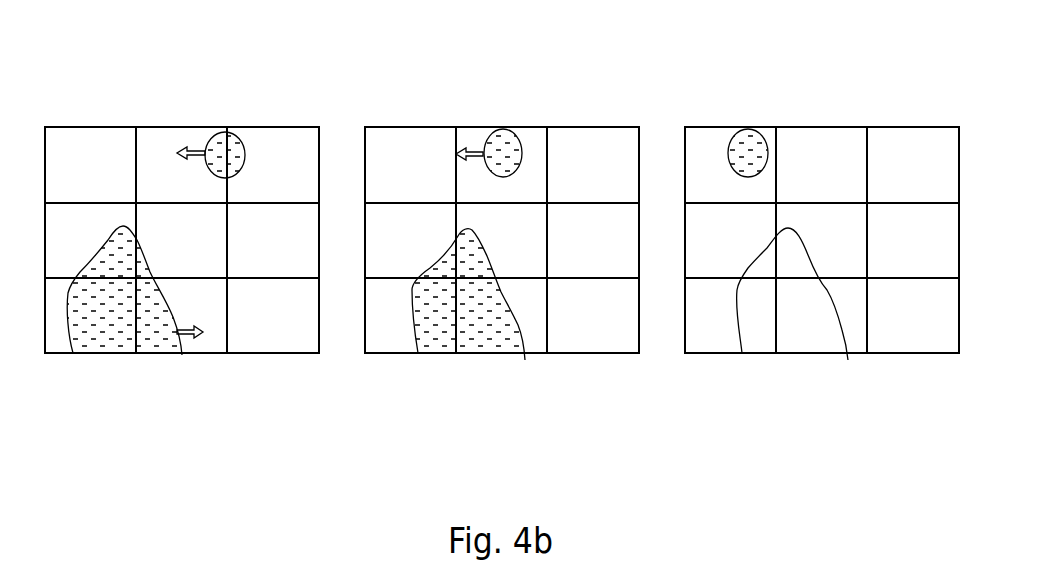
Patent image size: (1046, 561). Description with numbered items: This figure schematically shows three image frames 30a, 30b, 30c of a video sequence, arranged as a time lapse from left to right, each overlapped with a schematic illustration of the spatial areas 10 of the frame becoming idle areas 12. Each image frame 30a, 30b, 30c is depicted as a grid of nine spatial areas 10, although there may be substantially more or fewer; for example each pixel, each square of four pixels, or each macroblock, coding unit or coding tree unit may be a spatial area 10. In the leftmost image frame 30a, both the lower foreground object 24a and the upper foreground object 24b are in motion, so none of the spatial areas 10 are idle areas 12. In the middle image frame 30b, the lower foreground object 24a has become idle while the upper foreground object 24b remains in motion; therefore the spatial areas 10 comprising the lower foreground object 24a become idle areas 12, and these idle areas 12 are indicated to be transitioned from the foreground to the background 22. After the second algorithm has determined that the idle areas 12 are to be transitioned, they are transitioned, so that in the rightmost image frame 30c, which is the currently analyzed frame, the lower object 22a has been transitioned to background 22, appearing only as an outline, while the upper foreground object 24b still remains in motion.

The spatial area 10 is at (88, 127).
The idle area 12 is at (397, 198).
The background 22 is at (254, 208).
The lower object transitioned to background 22a is at (832, 288).
The lower foreground object 24a is at (163, 293).
The upper foreground object 24b is at (242, 138).
The leftmost image frame 30a is at (246, 74).
The middle image frame 30b is at (578, 74).
The rightmost image frame 30c is at (898, 74).